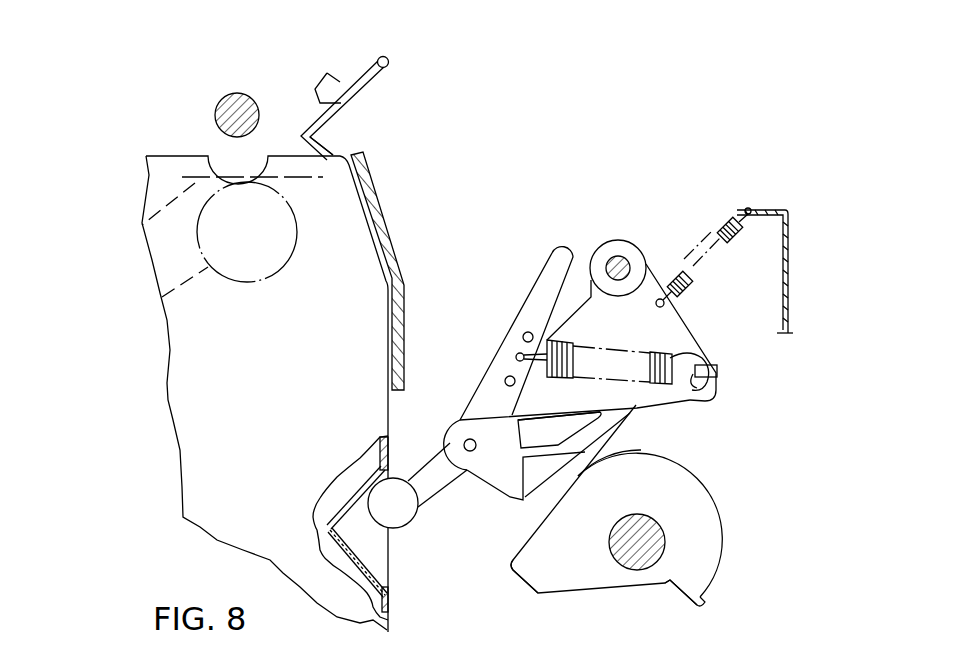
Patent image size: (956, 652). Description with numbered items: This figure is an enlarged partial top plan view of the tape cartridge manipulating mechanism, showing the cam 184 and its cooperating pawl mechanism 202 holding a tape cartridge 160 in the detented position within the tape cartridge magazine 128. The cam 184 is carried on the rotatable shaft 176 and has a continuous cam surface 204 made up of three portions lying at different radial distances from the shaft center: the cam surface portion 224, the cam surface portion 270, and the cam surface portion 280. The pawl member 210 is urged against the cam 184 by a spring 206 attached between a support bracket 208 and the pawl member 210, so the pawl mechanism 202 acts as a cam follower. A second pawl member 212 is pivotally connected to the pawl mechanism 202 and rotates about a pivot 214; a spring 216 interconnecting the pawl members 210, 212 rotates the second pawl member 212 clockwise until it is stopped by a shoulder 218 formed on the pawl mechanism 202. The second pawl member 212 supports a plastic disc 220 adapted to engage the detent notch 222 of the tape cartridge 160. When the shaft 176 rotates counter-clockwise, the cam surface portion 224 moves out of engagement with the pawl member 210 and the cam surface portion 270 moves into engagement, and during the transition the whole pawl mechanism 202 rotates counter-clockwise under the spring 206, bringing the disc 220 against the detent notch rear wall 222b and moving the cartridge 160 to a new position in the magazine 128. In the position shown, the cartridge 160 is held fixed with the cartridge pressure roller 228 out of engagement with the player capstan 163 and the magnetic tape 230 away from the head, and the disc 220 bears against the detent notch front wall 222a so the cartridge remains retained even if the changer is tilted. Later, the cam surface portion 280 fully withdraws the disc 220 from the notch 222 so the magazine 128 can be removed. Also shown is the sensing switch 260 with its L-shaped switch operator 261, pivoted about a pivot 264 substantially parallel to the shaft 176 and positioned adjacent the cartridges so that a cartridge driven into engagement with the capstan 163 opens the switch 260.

The tape cartridge magazine 128 is at (393, 247).
The tape cartridge 160 is at (360, 337).
The player capstan 163 is at (220, 112).
The rotatable shaft 176 is at (641, 521).
The cam 184 is at (656, 523).
The pawl mechanism 202 is at (549, 457).
The cam surface portion 204 is at (702, 473).
The spring 206 is at (720, 228).
The support bracket 208 is at (789, 275).
The pawl member 210 is at (687, 320).
The second pawl member 212 is at (483, 390).
The pivot 214 is at (465, 440).
The spring 216 is at (568, 347).
The shoulder 218 is at (516, 414).
The plastic disc 220 is at (410, 478).
The detent notch 222 is at (394, 528).
The detent notch front wall 222a is at (352, 505).
The detent notch rear wall 222b is at (378, 573).
The cam surface portion 224 is at (523, 582).
The cartridge pressure roller 228 is at (165, 294).
The magnetic tape 230 is at (142, 226).
The sensing switch 260 is at (385, 100).
The switch operator 261 is at (330, 123).
The pivot 264 is at (390, 64).
The cam surface portion 270 is at (578, 477).
The cam surface portion 280 is at (658, 583).